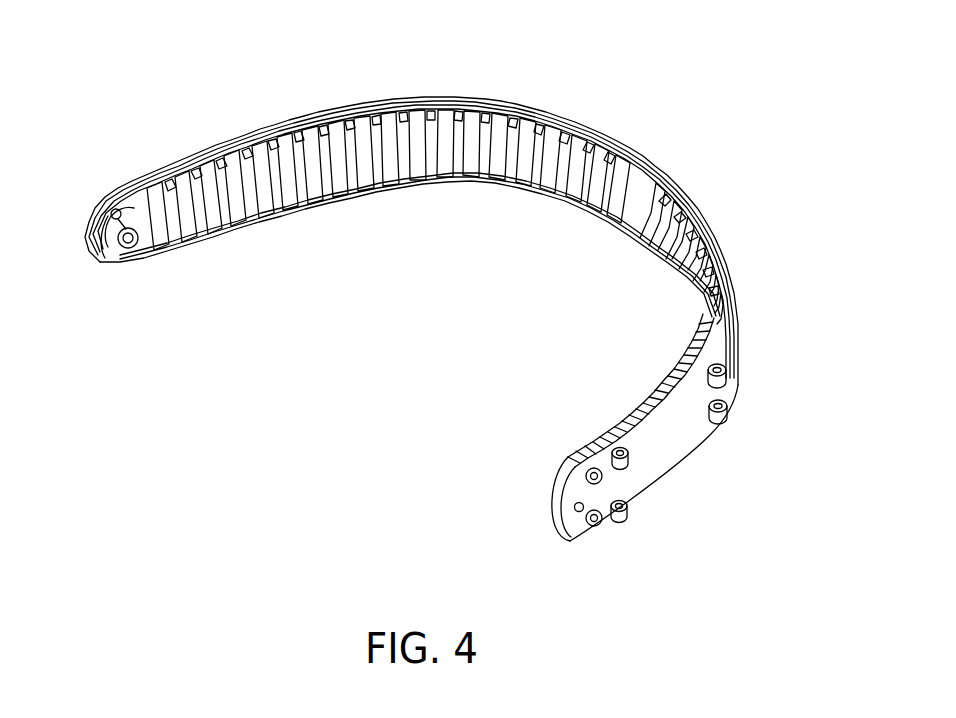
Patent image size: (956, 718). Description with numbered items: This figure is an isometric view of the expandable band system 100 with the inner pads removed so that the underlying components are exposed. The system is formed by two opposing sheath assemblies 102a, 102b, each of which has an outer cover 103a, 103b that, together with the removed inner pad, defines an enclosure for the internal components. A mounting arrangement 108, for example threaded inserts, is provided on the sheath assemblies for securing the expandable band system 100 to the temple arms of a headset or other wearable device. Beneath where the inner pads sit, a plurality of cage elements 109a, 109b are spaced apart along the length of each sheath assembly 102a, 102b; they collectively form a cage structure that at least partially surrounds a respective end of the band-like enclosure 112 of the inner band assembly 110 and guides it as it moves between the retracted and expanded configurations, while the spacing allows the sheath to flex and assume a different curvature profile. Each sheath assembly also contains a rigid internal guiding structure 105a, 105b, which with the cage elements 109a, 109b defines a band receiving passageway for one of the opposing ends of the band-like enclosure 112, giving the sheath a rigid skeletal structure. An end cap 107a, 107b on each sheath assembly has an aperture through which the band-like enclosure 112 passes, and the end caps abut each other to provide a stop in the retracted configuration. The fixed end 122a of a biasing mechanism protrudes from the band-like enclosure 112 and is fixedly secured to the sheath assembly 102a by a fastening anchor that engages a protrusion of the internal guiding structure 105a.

The expandable band system 100 is at (659, 131).
The sheath assembly 102a is at (385, 89).
The sheath assembly 102b is at (773, 297).
The outer cover 103a is at (268, 128).
The outer cover 103b is at (648, 463).
The internal guiding structure 105a is at (113, 250).
The internal guiding structure 105b is at (556, 492).
The end cap 107a is at (604, 212).
The end cap 107b is at (618, 226).
The mounting arrangement 108 is at (728, 411).
The cage elements 109a is at (386, 195).
The cage elements 109b is at (664, 225).
The inner band assembly 110 is at (250, 210).
The band-like enclosure 112 is at (293, 186).
The fixed end 122a is at (130, 252).